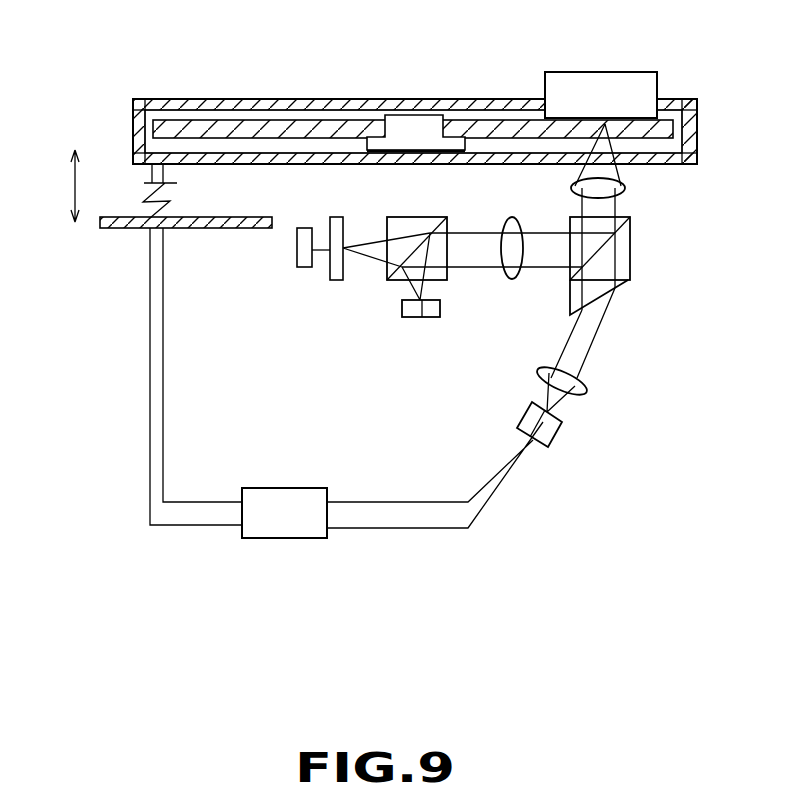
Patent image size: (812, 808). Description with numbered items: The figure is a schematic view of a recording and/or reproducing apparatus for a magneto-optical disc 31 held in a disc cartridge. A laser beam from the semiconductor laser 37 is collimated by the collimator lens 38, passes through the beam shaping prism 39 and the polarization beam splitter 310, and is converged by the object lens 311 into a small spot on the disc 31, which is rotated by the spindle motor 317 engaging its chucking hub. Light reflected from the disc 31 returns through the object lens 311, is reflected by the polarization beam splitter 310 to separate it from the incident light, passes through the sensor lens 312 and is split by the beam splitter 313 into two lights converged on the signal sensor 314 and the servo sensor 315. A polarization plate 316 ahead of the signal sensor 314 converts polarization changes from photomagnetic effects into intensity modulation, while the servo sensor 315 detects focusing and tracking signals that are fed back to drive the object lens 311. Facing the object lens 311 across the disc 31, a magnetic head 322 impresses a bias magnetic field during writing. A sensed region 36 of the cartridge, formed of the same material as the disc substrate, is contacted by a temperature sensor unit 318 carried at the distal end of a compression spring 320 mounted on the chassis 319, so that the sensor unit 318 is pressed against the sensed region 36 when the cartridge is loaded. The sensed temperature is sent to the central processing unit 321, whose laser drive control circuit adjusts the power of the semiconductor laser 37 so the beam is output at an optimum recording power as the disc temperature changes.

The disc 31 is at (660, 128).
The sensed region 36 is at (143, 158).
The semiconductor laser 37 is at (552, 440).
The collimator lens 38 is at (573, 380).
The beam shaping prism 39 is at (605, 296).
The polarization beam splitter 310 is at (628, 267).
The object lens 311 is at (610, 195).
The sensor lens 312 is at (510, 263).
The beam splitter 313 is at (440, 280).
The signal sensor 314 is at (297, 233).
The servo sensor 315 is at (405, 316).
The polarization plate 316 is at (335, 275).
The spindle motor 317 is at (415, 132).
The temperature sensor unit 318 is at (150, 175).
The chassis 319 is at (118, 230).
The compression spring 320 is at (145, 195).
The central processing unit 321 is at (278, 540).
The magnetic head 322 is at (610, 85).